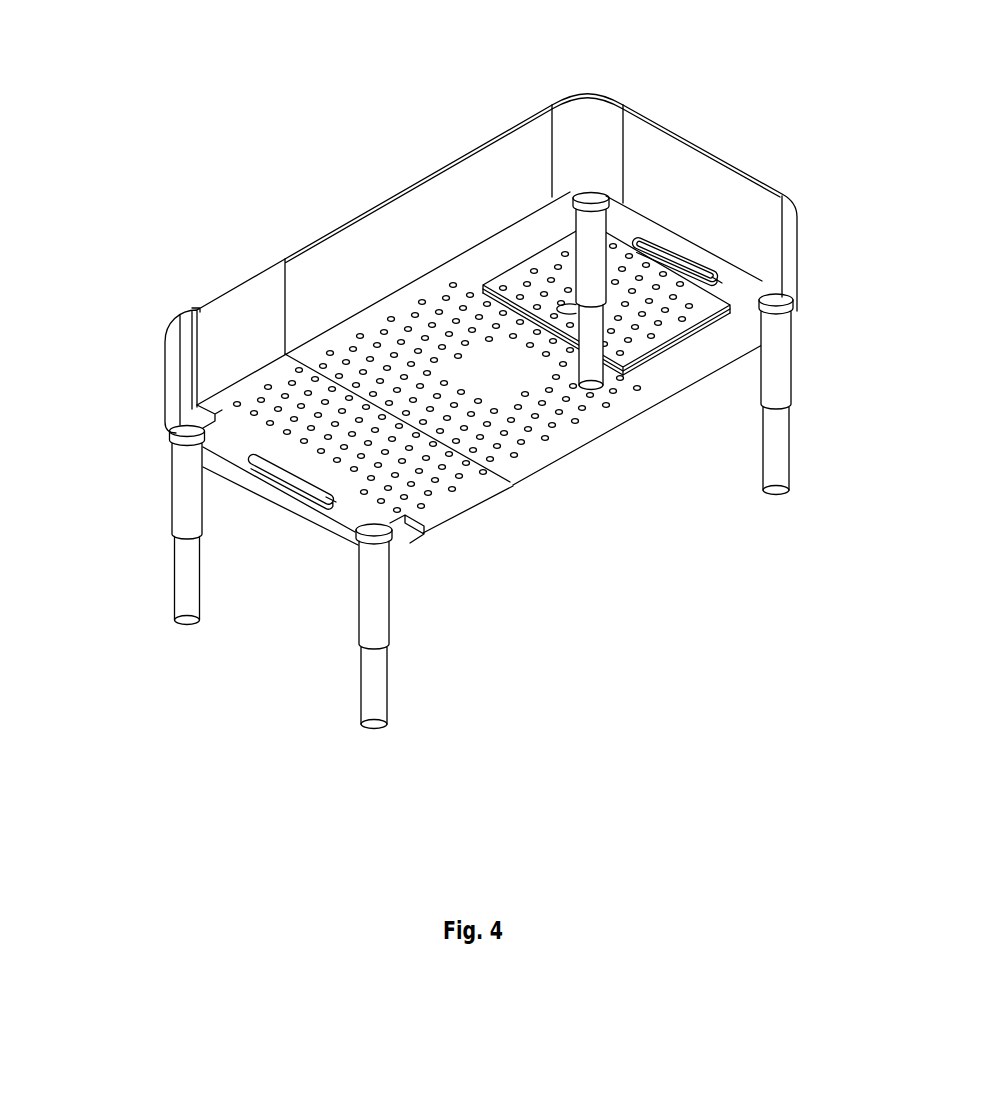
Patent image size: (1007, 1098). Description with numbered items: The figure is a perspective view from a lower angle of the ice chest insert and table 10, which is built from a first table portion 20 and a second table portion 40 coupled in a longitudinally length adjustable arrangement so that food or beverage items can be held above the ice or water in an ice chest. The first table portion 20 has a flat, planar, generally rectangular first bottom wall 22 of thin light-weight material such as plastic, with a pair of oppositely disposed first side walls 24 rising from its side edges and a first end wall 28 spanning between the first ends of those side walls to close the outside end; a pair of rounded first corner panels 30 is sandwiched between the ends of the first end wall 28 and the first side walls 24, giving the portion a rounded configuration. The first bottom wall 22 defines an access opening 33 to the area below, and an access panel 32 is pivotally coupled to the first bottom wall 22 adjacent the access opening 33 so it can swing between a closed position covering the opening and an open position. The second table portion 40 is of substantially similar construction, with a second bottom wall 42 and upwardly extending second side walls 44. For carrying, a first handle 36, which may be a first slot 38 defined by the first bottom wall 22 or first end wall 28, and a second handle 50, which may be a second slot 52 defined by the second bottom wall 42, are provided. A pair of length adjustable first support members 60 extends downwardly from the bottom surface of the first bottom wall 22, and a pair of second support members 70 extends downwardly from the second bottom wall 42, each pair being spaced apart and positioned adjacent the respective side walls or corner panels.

The ice chest insert and table 10 is at (459, 368).
The first table portion 20 is at (541, 181).
The first bottom wall 22 is at (479, 357).
The first side walls 24 is at (418, 229).
The first end wall 28 is at (710, 201).
The first corner panels 30 is at (587, 116).
The access panel 32 is at (611, 347).
The access opening 33 is at (611, 360).
The first handle 36 is at (792, 289).
The first slot 38 is at (748, 255).
The second table portion 40 is at (166, 358).
The second bottom wall 42 is at (167, 445).
The second side walls 44 is at (225, 331).
The second handle 50 is at (333, 554).
The second slot 52 is at (291, 513).
The first support members 60 is at (674, 283).
The second support members 70 is at (279, 577).